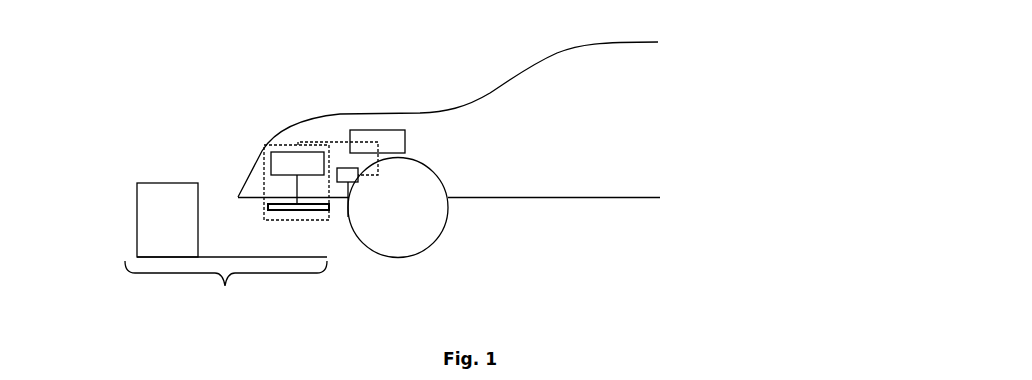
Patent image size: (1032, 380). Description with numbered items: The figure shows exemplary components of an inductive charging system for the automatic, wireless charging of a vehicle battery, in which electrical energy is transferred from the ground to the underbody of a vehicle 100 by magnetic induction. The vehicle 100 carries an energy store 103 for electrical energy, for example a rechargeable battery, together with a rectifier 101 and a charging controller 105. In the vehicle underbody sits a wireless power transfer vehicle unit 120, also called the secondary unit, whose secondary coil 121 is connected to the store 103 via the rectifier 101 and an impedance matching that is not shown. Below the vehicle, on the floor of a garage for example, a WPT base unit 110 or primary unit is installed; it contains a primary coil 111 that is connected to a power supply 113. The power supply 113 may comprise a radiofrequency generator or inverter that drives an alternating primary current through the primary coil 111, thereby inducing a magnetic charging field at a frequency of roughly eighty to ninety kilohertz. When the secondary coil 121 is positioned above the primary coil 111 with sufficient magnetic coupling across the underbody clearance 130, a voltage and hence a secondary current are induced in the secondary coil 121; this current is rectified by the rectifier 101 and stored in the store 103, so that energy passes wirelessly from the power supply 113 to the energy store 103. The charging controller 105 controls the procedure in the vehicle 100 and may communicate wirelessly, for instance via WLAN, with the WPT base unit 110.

The vehicle 100 is at (501, 68).
The rectifier 101 is at (268, 152).
The energy store 103 is at (367, 135).
The charging controller 105 is at (343, 167).
The WPT base unit 110 is at (225, 286).
The primary coil 111 is at (328, 258).
The power supply 113 is at (149, 222).
The WPT vehicle unit 120 is at (279, 143).
The secondary coil 121 is at (308, 209).
The underbody clearance 130 is at (279, 242).